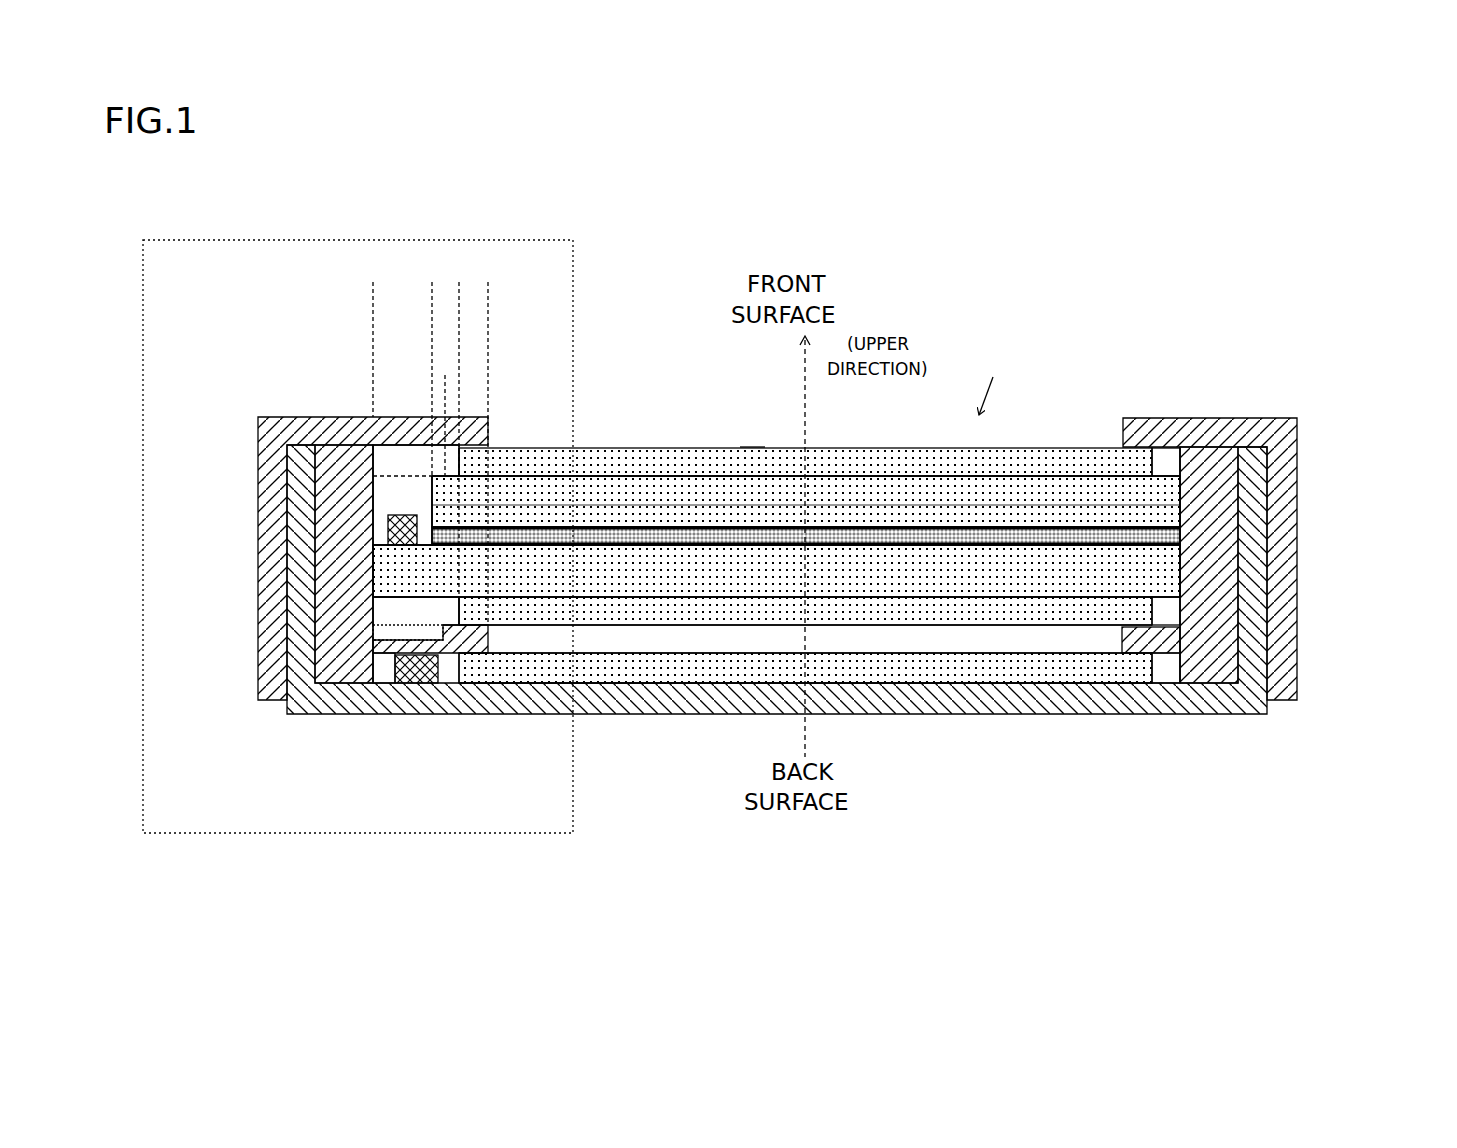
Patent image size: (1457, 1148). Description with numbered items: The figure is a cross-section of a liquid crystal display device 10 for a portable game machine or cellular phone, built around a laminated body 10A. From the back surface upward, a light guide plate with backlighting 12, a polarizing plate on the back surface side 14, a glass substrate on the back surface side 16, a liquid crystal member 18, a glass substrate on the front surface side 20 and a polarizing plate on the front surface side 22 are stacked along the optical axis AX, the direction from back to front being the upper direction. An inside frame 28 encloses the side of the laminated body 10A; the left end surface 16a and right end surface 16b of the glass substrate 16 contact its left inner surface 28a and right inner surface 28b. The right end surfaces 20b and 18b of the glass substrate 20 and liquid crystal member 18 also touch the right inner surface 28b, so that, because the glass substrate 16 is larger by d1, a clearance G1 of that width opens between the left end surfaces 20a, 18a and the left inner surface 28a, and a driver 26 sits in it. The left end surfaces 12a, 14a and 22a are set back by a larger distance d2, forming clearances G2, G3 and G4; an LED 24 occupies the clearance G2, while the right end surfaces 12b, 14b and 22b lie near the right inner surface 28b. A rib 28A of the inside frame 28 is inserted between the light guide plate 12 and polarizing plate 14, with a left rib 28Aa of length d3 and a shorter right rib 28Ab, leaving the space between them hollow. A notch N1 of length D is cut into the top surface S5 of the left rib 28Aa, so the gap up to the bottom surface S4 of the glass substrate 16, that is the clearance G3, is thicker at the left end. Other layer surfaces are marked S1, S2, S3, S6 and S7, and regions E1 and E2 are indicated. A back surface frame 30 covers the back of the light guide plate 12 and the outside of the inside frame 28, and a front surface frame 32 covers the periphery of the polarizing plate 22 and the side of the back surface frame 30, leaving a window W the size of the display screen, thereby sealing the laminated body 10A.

The liquid crystal display device 10 is at (705, 268).
The laminated body 10A is at (912, 574).
The light guide plate with backlighting 12 is at (1162, 668).
The left end surface of light guide plate 12a is at (470, 668).
The second end of layer 12 12b is at (1146, 667).
The polarizing plate on the back surface side 14 is at (1162, 612).
The left end surface of back polarizing plate 14a is at (492, 600).
The second end of layer 14 14b is at (1146, 612).
The glass substrate on the back surface side 16 is at (1183, 575).
The left end surface of back glass substrate 16a is at (378, 578).
The right end surface of back glass substrate 16b is at (1176, 580).
The liquid crystal member 18 is at (1183, 536).
The left end surface of liquid crystal member 18a is at (560, 527).
The right end surface of liquid crystal member 18b is at (1044, 528).
The glass substrate on the front surface side 20 is at (1183, 500).
The left end surface of front glass substrate 20a is at (510, 503).
The right end surface of front glass substrate 20b is at (1176, 505).
The polarizing plate on the front surface side 22 is at (1160, 464).
The left end surface of front polarizing plate 22a is at (462, 462).
The second end of layer 22 22b is at (1148, 463).
The LED 24 is at (402, 683).
The driver 26 is at (387, 538).
The inside frame 28 is at (762, 617).
The left inner surface of inside frame 28a is at (369, 585).
The right inner surface of inside frame 28b is at (1186, 585).
The rib 28A is at (776, 764).
The left rib 28Aa is at (455, 653).
The second support step 28Ab is at (1115, 653).
The back surface frame 30 is at (712, 714).
The front surface frame 32 is at (275, 416).
The clearance G1 is at (397, 493).
The clearance G2 is at (388, 668).
The clearance G3 is at (397, 610).
The clearance G4 is at (397, 460).
The notch N1 is at (378, 633).
The surface S1 is at (612, 480).
The surface S2 is at (612, 546).
The surface S3 is at (612, 527).
The bottom surface of back glass substrate S4 is at (612, 597).
The top surface of left rib S5 is at (478, 628).
The surface S6 is at (476, 652).
The surface S7 is at (612, 687).
The optical axis AX is at (807, 398).
The first region E1 is at (752, 447).
The enlarged region E2 is at (573, 290).
The window W is at (991, 383).
The dimensional difference d1 is at (427, 298).
The clearance length d2 is at (455, 328).
The rib length d3 is at (484, 358).
The notch length D is at (441, 387).